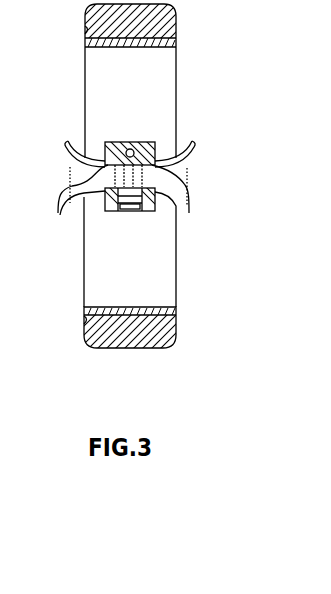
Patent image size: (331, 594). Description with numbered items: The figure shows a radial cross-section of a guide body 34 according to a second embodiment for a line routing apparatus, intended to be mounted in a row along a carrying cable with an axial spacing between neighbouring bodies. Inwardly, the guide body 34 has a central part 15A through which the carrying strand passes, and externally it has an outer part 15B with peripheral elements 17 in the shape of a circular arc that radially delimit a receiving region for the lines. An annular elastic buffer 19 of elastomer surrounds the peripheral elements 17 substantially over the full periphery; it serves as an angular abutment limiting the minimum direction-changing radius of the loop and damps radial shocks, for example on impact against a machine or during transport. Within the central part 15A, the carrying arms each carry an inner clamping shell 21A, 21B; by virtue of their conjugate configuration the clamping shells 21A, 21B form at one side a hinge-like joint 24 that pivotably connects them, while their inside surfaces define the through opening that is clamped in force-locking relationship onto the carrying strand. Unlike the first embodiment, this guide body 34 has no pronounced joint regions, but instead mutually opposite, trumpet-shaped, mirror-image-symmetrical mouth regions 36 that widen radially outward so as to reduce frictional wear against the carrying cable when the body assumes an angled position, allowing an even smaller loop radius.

The annular elastic buffer 19 is at (90, 32).
The outer part 15B is at (198, 5).
The central part 15A is at (237, 58).
The mouth regions 36 is at (80, 140).
The hinge-like joint 24 is at (133, 218).
The inner clamping shell 21B is at (85, 204).
The inner clamping shell 21A is at (155, 197).
The peripheral element 17 is at (90, 254).
The guide body 34 is at (56, 314).